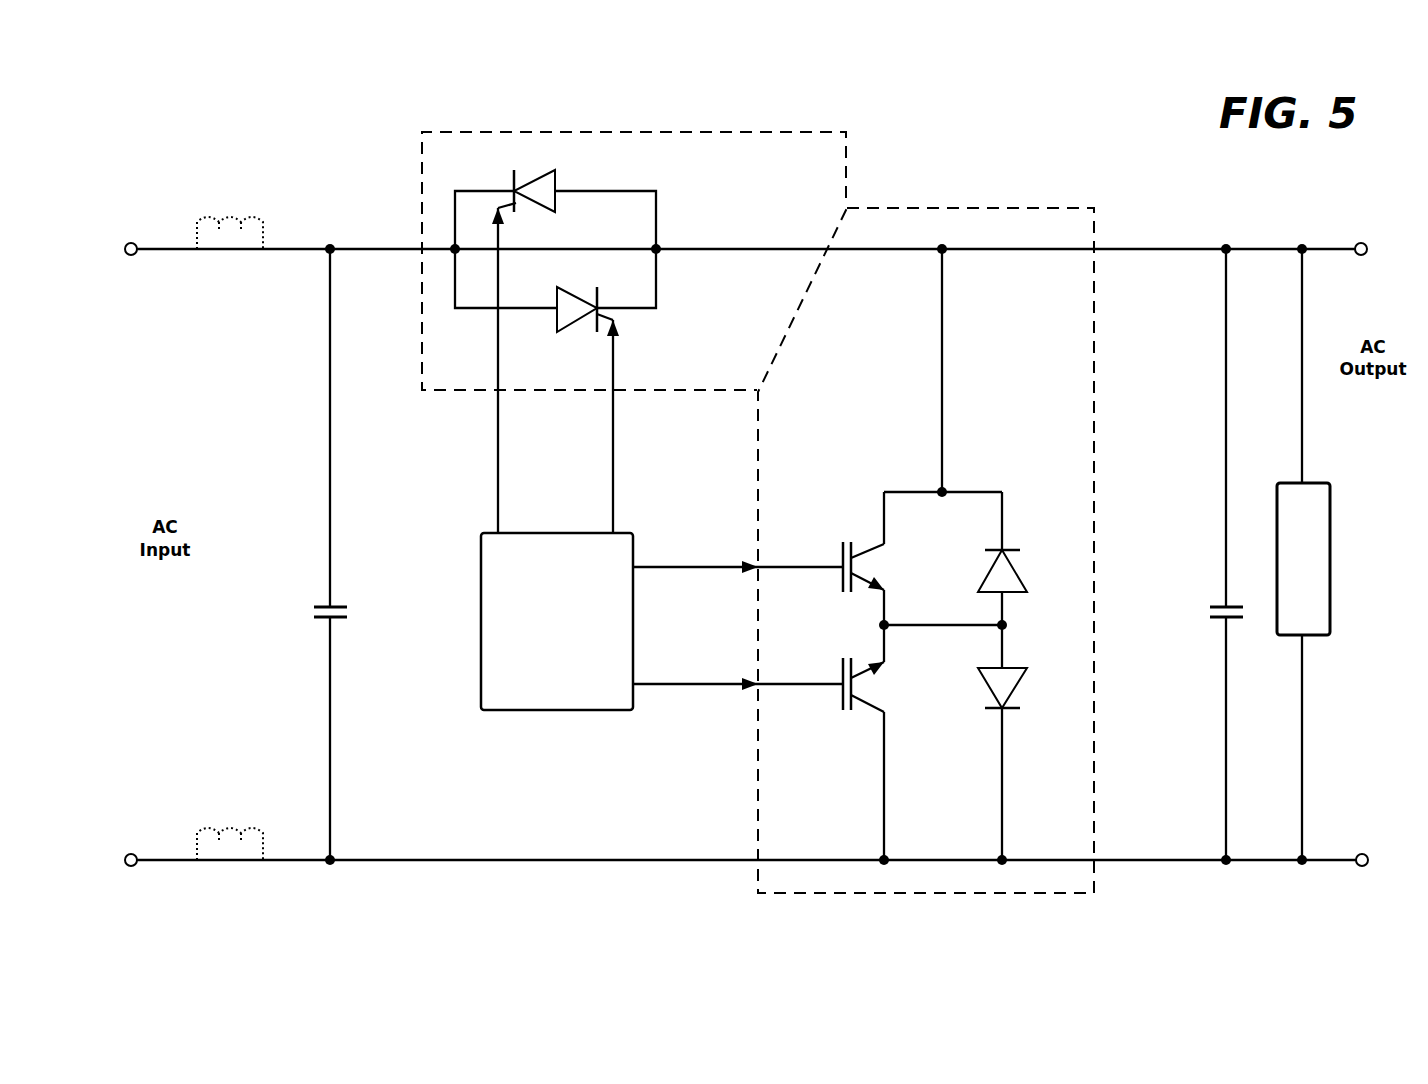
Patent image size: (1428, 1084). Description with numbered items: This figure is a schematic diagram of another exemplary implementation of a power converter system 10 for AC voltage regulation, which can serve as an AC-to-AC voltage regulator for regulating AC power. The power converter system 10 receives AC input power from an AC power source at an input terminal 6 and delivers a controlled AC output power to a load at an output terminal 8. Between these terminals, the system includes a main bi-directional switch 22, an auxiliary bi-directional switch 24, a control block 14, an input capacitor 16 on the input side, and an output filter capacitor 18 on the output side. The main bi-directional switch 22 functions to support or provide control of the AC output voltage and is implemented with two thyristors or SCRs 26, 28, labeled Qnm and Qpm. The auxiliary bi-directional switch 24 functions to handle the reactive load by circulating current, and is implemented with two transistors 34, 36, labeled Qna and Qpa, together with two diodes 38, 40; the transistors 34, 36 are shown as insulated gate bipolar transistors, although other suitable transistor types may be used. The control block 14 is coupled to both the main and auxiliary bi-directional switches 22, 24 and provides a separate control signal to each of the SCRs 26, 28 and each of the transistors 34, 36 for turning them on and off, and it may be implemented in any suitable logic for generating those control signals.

The input terminal 6 is at (176, 254).
The output terminal 8 is at (1319, 248).
The power converter system 10 is at (200, 170).
The control block 14 is at (580, 712).
The input capacitor 16 is at (323, 621).
The output filter capacitor 18 is at (1219, 621).
The main bi-directional switch 22 is at (658, 261).
The auxiliary bi-directional switch 24 is at (926, 534).
The thyristor or SCR 26 is at (565, 170).
The thyristor or SCR 28 is at (566, 288).
The transistor 34 is at (838, 545).
The transistor 36 is at (838, 660).
The diode 38 is at (1022, 571).
The diode 40 is at (1013, 668).